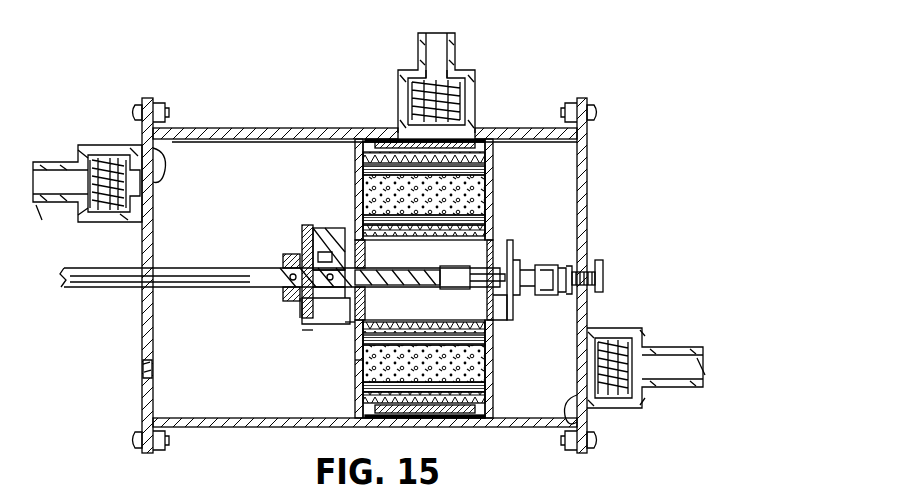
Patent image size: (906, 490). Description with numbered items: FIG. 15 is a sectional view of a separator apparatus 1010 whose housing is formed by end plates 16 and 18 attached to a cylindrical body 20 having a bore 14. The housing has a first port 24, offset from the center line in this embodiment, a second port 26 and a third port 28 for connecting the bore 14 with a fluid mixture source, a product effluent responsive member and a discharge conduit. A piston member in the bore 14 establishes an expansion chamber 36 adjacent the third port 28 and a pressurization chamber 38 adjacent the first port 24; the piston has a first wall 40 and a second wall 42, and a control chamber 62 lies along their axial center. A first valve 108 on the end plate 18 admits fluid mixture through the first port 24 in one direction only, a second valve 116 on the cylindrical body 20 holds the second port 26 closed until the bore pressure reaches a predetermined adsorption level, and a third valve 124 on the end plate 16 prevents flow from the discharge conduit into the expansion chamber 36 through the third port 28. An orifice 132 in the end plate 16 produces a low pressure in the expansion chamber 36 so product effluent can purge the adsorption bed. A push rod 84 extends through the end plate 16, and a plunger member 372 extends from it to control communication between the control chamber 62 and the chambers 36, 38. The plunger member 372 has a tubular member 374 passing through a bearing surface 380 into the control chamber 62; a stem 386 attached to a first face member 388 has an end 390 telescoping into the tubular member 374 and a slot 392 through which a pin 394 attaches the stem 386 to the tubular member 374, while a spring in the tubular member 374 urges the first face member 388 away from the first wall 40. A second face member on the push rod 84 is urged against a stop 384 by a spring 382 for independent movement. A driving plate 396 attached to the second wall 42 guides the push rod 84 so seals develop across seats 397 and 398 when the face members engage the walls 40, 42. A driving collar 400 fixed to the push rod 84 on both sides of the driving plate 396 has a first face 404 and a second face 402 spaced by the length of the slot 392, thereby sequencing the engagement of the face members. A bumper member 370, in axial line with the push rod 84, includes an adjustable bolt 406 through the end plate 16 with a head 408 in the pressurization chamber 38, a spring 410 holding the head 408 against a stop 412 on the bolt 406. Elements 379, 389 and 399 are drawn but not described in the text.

The bore 14 is at (256, 426).
The end plate 16 is at (142, 330).
The end plate 18 is at (588, 166).
The cylindrical body 20 is at (290, 128).
The first port 24 is at (584, 408).
The second port 26 is at (482, 133).
The third port 28 is at (155, 160).
The expansion chamber 36 is at (222, 183).
The pressurization chamber 38 is at (540, 398).
The first wall 40 is at (500, 152).
The second wall 42 is at (355, 163).
The control chamber 62 is at (423, 255).
The push rod 84 is at (70, 284).
The first valve 108 is at (628, 342).
The second valve 116 is at (470, 80).
The third valve 124 is at (95, 148).
The orifice 132 is at (145, 371).
The bumper member 370 is at (600, 251).
The plunger member 372 is at (497, 245).
The tubular member 374 is at (362, 365).
The bracket 379 is at (302, 334).
The bearing surface 380 is at (357, 200).
The spring 382 is at (357, 225).
The stop 384 is at (326, 306).
The stem 386 is at (494, 306).
The first face member 388 is at (516, 245).
The spring end 389 is at (526, 264).
The end 390 is at (440, 286).
The slot 392 is at (478, 267).
The pin 394 is at (461, 288).
The driving plate 396 is at (357, 331).
The seat 397 is at (335, 228).
The seat 398 is at (510, 240).
The tab 399 is at (304, 320).
The driving collar 400 is at (280, 300).
The second face 402 is at (310, 230).
The first face 404 is at (285, 258).
The adjustable bolt 406 is at (605, 279).
The head 408 is at (553, 268).
The spring 410 is at (570, 296).
The stop 412 is at (553, 296).
The separator apparatus 1010 is at (196, 443).